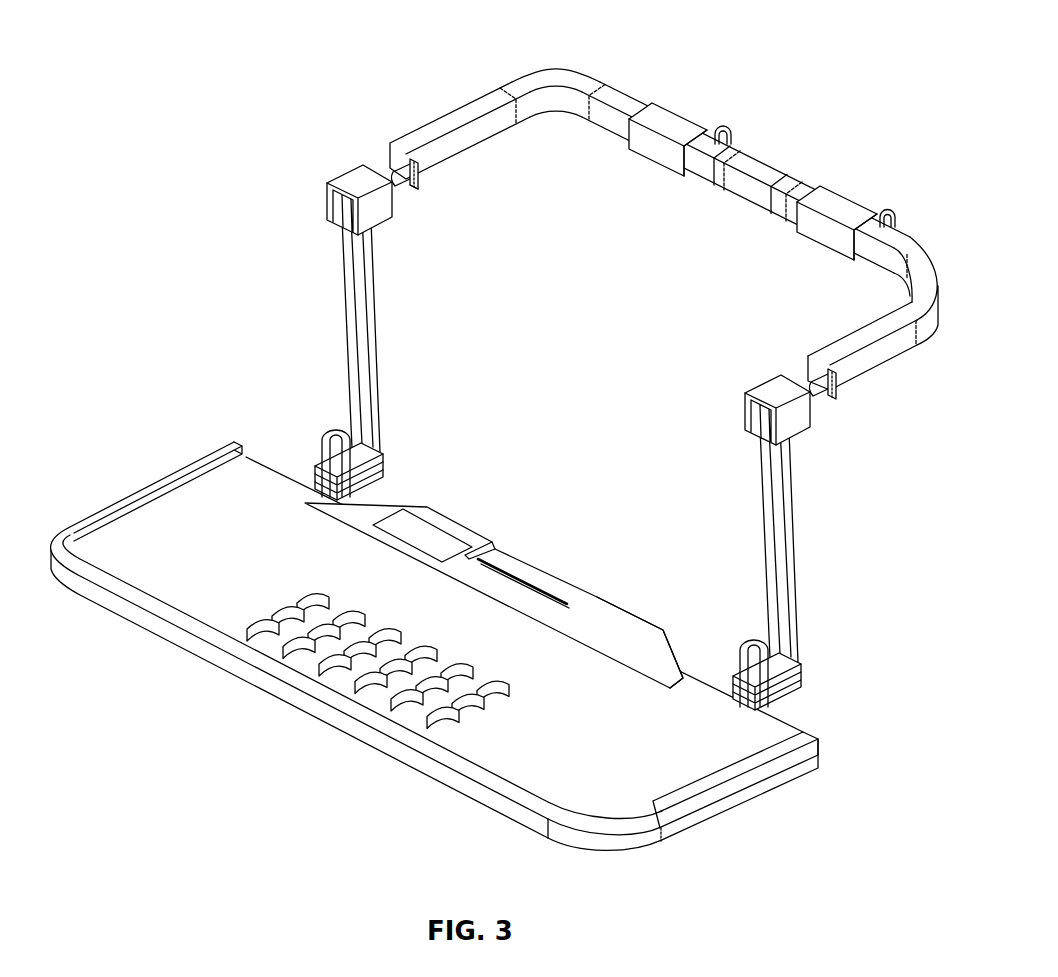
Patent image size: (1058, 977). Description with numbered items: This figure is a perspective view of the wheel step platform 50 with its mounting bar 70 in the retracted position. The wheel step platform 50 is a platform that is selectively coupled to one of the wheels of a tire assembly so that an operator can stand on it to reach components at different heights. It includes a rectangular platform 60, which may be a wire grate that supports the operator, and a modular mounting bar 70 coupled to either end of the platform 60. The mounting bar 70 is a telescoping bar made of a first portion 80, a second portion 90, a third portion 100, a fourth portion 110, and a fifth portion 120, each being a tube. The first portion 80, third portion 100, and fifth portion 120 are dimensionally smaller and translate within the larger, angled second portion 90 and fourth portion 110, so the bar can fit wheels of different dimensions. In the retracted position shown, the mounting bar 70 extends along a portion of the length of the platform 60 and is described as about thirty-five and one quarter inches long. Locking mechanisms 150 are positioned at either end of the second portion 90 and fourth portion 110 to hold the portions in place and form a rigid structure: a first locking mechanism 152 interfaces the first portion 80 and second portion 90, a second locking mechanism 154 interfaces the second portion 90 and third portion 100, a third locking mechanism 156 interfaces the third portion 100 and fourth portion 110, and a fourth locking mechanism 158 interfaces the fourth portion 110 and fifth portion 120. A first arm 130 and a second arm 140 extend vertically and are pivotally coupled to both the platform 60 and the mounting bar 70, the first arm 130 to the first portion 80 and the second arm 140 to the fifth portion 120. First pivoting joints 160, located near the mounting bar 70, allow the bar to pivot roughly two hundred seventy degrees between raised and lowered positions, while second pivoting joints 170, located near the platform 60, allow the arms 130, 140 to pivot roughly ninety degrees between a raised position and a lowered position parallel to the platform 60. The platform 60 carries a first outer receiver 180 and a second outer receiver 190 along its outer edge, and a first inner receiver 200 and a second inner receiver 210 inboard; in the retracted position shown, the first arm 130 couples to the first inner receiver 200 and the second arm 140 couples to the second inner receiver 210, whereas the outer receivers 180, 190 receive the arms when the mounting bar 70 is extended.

The wheel step platform 50 is at (841, 60).
The platform 60 is at (137, 543).
The mounting bar 70 is at (676, 198).
The first portion 80 is at (397, 178).
The second portion 90 is at (594, 86).
The third portion 100 is at (740, 167).
The fourth portion 110 is at (920, 254).
The fifth portion 120 is at (820, 392).
The first arm 130 is at (347, 314).
The second arm 140 is at (760, 547).
The locking mechanisms 150 is at (410, 160).
The first locking mechanism 152 is at (421, 182).
The second locking mechanism 154 is at (715, 125).
The third locking mechanism 156 is at (883, 208).
The fourth locking mechanism 158 is at (799, 357).
The first pivoting joints 160 is at (347, 183).
The second pivoting joints 170 is at (324, 440).
The first outer receiver 180 is at (197, 455).
The second outer receiver 190 is at (811, 748).
The first inner receiver 200 is at (492, 623).
The second inner receiver 210 is at (730, 695).